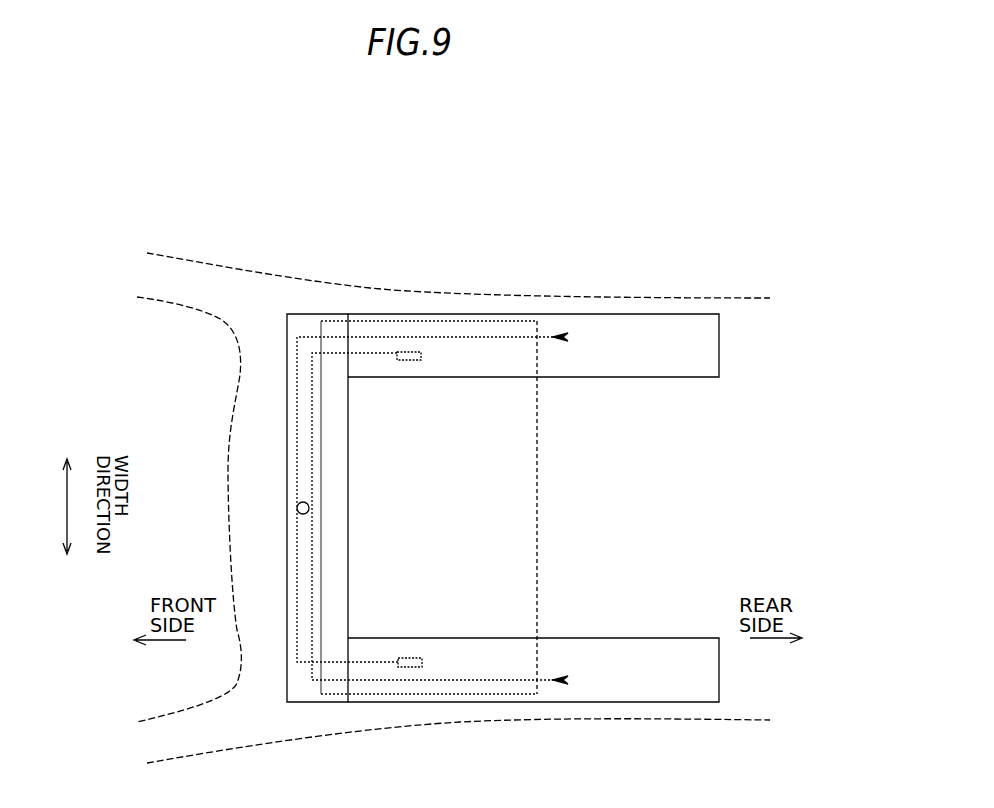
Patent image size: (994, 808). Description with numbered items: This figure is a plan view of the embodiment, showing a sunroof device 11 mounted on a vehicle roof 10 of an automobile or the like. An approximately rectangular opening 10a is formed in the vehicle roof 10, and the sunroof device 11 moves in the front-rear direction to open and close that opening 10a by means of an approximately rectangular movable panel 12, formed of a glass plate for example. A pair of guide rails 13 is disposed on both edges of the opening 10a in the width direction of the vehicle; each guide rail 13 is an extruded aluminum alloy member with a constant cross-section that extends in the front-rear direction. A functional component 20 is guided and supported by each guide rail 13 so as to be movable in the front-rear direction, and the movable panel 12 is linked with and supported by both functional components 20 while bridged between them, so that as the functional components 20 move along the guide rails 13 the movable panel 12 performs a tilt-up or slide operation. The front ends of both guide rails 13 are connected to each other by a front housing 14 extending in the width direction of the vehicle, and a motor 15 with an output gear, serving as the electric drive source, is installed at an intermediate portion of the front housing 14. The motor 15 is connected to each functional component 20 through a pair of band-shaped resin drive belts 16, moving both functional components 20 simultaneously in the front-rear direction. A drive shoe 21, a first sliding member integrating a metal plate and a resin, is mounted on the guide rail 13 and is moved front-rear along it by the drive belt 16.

The vehicle roof 10 is at (530, 723).
The opening 10a is at (457, 505).
The sunroof device 11 is at (648, 282).
The movable panel 12 is at (538, 507).
The guide rail 13 is at (490, 314).
The front housing 14 is at (287, 320).
The motor 15 is at (298, 514).
The drive belt 16 is at (296, 578).
The functional component 20 is at (421, 509).
The drive shoe 21 is at (410, 360).